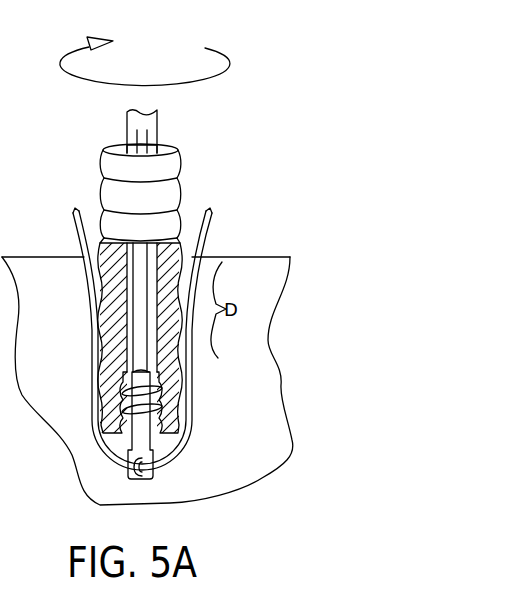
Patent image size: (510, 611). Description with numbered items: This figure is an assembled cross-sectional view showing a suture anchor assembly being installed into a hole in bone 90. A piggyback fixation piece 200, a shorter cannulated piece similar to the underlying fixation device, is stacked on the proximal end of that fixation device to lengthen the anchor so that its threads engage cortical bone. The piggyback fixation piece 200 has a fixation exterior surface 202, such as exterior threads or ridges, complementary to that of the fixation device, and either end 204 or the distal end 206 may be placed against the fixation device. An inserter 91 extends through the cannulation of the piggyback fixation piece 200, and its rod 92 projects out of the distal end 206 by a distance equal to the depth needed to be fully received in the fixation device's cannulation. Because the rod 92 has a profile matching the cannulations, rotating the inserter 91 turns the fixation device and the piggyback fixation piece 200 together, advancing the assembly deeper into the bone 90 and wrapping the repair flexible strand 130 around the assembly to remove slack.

The piggyback fixation piece 200 is at (159, 288).
The fixation exterior surface 202 is at (103, 205).
The end of piggyback fixation piece 204 is at (118, 148).
The inserter 91 is at (150, 128).
The rod 92 is at (130, 300).
The distal end of piggyback fixation piece 206 is at (185, 256).
The bone 90 is at (261, 398).
The flexible strand 130 is at (187, 417).